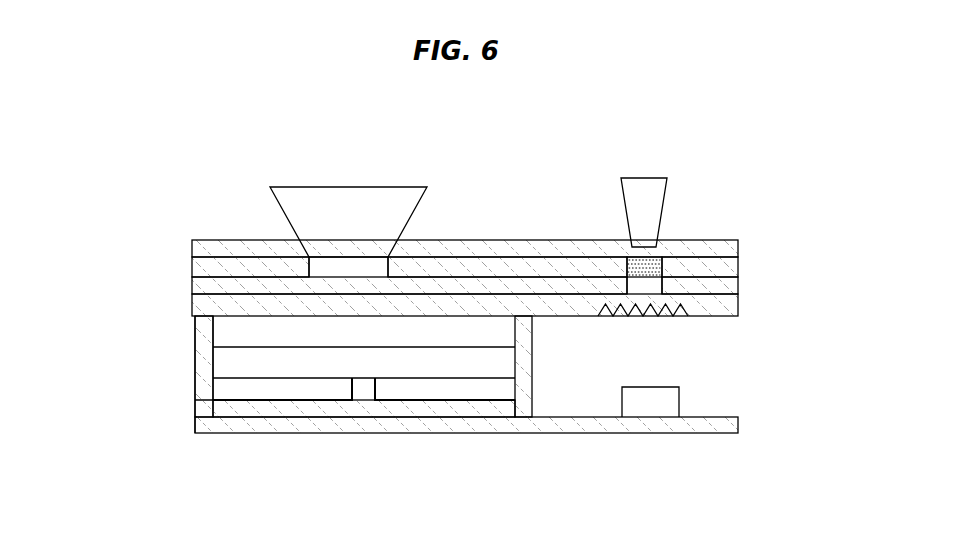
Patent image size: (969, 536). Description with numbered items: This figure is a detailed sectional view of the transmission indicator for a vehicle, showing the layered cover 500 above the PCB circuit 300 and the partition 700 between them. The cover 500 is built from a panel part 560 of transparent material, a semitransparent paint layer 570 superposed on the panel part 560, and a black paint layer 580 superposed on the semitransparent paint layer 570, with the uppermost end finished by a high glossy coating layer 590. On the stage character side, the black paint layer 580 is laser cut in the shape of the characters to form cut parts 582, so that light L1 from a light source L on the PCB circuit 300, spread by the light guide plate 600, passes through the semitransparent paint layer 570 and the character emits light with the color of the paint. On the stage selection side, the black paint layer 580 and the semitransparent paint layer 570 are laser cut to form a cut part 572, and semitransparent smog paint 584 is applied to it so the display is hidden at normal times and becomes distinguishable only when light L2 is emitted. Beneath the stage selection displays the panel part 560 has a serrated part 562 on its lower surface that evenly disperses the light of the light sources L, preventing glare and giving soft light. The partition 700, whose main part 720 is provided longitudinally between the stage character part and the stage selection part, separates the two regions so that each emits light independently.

The cover 500 is at (457, 251).
The high glossy coating layer 590 is at (738, 243).
The black paint layer 580 is at (738, 265).
The semitransparent paint layer 570 is at (738, 285).
The panel part 560 is at (738, 305).
The serrated part 562 is at (686, 318).
The cut part 582 is at (368, 267).
The semitransparent smog paint 584 is at (626, 263).
The cut part 572 is at (652, 286).
The first light L1 is at (320, 195).
The second light L2 is at (643, 190).
The partition 700 is at (404, 421).
The main part 720 is at (523, 398).
The PCB circuit 300 is at (433, 426).
The light guide plate 600 is at (293, 371).
The light source L is at (655, 405).